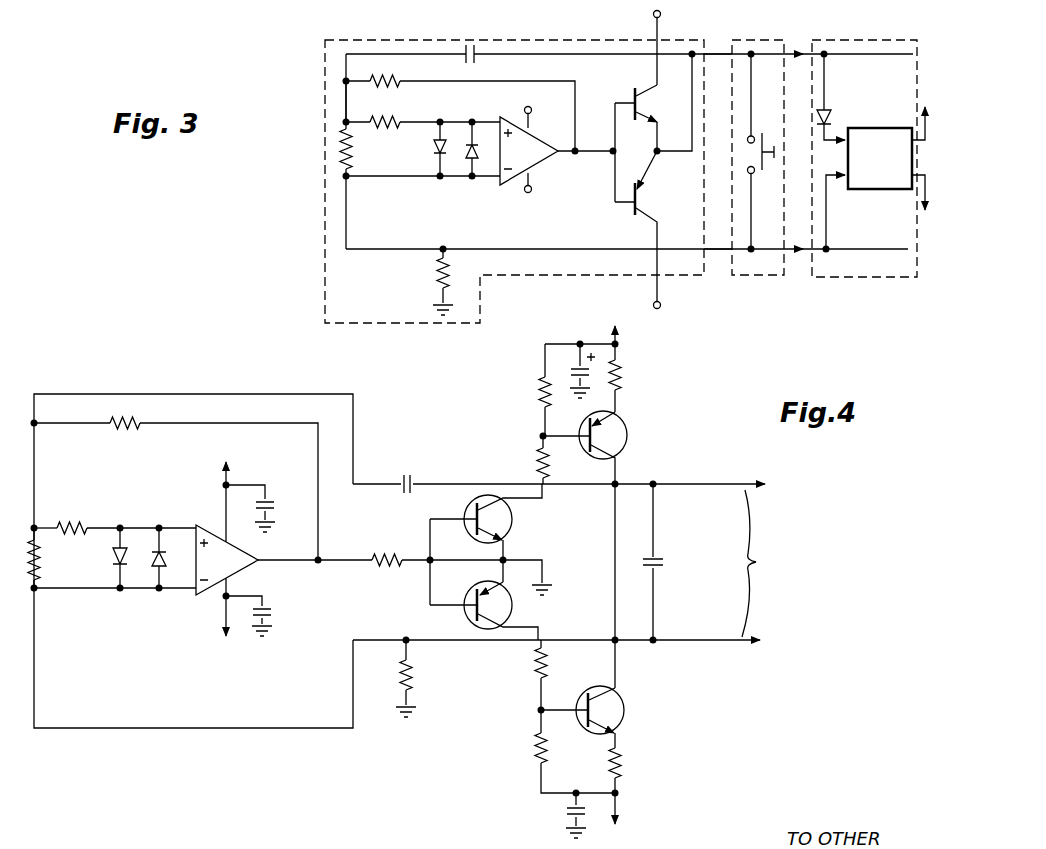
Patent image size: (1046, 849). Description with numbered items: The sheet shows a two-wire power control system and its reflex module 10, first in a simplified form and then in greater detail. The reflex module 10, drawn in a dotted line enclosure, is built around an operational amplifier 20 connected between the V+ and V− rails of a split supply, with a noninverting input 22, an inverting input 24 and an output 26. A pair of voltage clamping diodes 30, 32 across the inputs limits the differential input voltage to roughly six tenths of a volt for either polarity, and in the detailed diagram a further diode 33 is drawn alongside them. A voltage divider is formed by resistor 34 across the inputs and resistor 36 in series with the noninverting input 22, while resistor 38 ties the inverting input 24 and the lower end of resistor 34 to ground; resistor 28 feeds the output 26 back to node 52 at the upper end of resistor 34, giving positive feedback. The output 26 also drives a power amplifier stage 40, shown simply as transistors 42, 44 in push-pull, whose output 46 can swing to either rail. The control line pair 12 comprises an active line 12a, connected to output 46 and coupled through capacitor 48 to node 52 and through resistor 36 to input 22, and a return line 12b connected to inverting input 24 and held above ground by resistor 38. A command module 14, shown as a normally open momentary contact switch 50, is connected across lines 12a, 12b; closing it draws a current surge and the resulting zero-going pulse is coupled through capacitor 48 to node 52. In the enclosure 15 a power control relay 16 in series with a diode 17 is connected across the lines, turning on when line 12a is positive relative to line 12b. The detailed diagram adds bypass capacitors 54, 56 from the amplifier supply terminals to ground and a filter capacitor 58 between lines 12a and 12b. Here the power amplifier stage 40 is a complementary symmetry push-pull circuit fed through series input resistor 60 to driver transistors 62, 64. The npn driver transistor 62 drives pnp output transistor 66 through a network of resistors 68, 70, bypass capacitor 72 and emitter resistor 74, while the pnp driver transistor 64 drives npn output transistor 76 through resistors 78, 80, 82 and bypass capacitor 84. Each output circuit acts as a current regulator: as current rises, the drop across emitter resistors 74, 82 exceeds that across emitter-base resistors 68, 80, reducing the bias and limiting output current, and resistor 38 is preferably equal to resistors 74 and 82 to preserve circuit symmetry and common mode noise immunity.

In FIG. 3, the reflex module 10 is at (318, 244).
In FIG. 4, the reflex module 10 is at (467, 656).
In FIG. 4, the control line pair 12 is at (767, 563).
In FIG. 3, the active line 12a is at (723, 54).
In FIG. 4, the active line 12a is at (746, 486).
In FIG. 3, the return line 12b is at (718, 262).
In FIG. 4, the return line 12b is at (683, 643).
In FIG. 3, the command module 14 is at (790, 39).
In FIG. 3, the dotted line enclosure 15 is at (850, 282).
In FIG. 3, the power control relay 16 is at (899, 130).
In FIG. 3, the diode 17 is at (832, 116).
In FIG. 3, the operational amplifier 20 is at (511, 184).
In FIG. 4, the operational amplifier 20 is at (213, 591).
In FIG. 4, the noninverting input 22 is at (191, 513).
In FIG. 3, the inverting input 24 is at (479, 180).
In FIG. 4, the inverting input 24 is at (184, 593).
In FIG. 4, the output 26 is at (317, 563).
In FIG. 3, the resistor 28 is at (386, 78).
In FIG. 4, the resistor 28 is at (125, 433).
In FIG. 3, the voltage clamping diode 30 is at (432, 150).
In FIG. 3, the voltage clamping diode 32 is at (446, 180).
In FIG. 4, the voltage clamping diode 32 is at (112, 560).
In FIG. 4, the diode 33 is at (146, 567).
In FIG. 3, the resistor 34 is at (340, 143).
In FIG. 4, the resistor 34 is at (40, 574).
In FIG. 3, the resistor 36 is at (394, 122).
In FIG. 4, the resistor 36 is at (80, 524).
In FIG. 3, the resistor 38 is at (440, 281).
In FIG. 4, the resistor 38 is at (405, 679).
In FIG. 3, the power amplifier stage 40 is at (614, 82).
In FIG. 4, the power amplifier stage 40 is at (507, 476).
In FIG. 3, the transistor 42 is at (645, 105).
In FIG. 3, the transistor 44 is at (645, 205).
In FIG. 3, the output 46 is at (680, 155).
In FIG. 3, the capacitor 48 is at (477, 50).
In FIG. 4, the capacitor 48 is at (434, 458).
In FIG. 3, the momentary contact switch 50 is at (763, 173).
In FIG. 3, the node 52 is at (344, 121).
In FIG. 4, the node 52 is at (36, 527).
In FIG. 4, the bypass capacitor 54 is at (276, 506).
In FIG. 4, the bypass capacitor 56 is at (274, 618).
In FIG. 4, the filter capacitor 58 is at (665, 563).
In FIG. 4, the series input resistor 60 is at (404, 553).
In FIG. 4, the npn driver transistor 62 is at (514, 521).
In FIG. 4, the pnp driver transistor 64 is at (514, 607).
In FIG. 4, the pnp output transistor 66 is at (629, 419).
In FIG. 4, the resistor 68 is at (541, 398).
In FIG. 4, the resistor 70 is at (538, 455).
In FIG. 4, the bypass capacitor 72 is at (573, 374).
In FIG. 4, the emitter resistor 74 is at (623, 369).
In FIG. 4, the npn output transistor 76 is at (627, 713).
In FIG. 4, the resistor 78 is at (538, 669).
In FIG. 4, the resistor 80 is at (540, 757).
In FIG. 4, the emitter resistor 82 is at (629, 768).
In FIG. 4, the bypass capacitor 84 is at (571, 810).